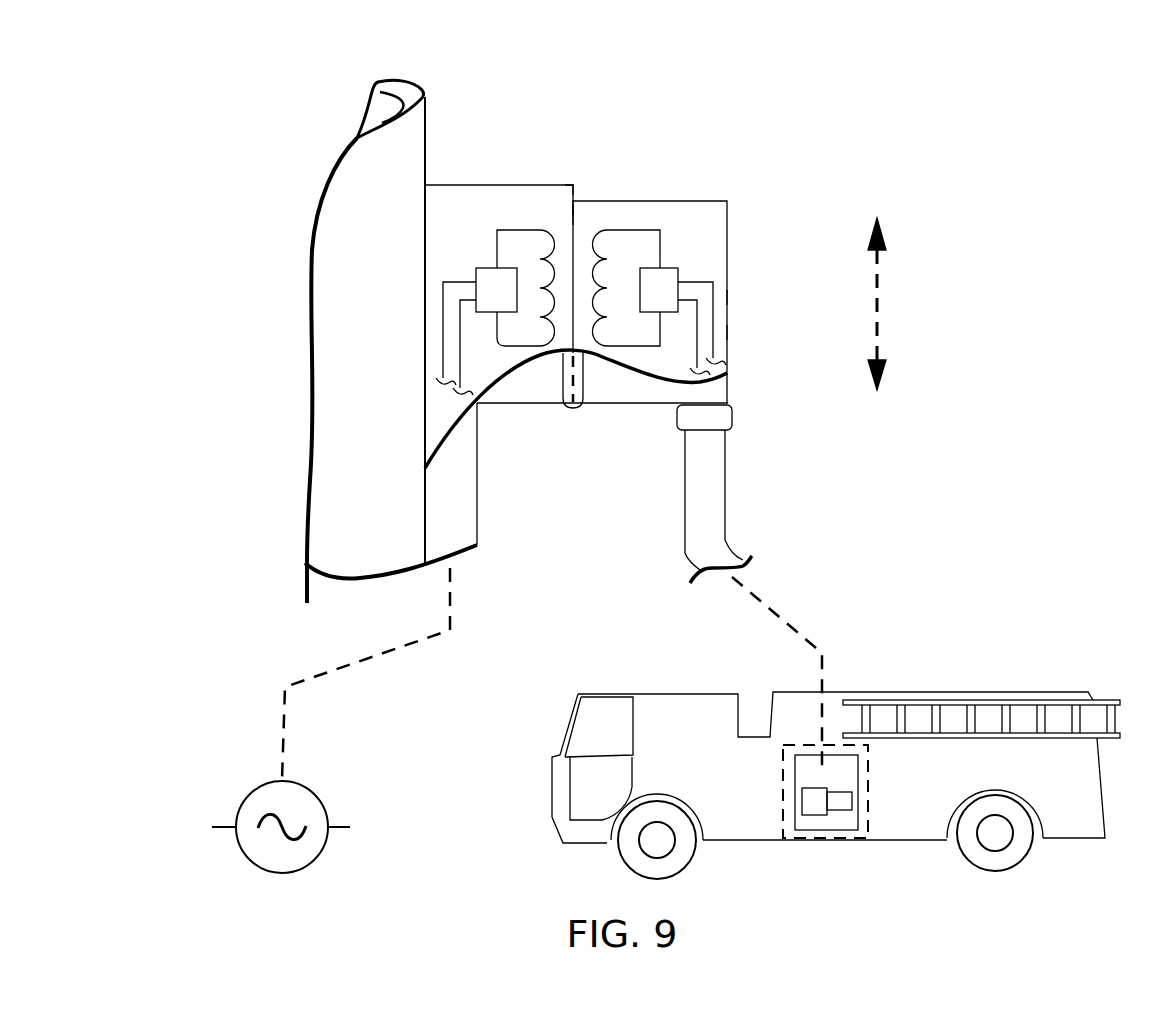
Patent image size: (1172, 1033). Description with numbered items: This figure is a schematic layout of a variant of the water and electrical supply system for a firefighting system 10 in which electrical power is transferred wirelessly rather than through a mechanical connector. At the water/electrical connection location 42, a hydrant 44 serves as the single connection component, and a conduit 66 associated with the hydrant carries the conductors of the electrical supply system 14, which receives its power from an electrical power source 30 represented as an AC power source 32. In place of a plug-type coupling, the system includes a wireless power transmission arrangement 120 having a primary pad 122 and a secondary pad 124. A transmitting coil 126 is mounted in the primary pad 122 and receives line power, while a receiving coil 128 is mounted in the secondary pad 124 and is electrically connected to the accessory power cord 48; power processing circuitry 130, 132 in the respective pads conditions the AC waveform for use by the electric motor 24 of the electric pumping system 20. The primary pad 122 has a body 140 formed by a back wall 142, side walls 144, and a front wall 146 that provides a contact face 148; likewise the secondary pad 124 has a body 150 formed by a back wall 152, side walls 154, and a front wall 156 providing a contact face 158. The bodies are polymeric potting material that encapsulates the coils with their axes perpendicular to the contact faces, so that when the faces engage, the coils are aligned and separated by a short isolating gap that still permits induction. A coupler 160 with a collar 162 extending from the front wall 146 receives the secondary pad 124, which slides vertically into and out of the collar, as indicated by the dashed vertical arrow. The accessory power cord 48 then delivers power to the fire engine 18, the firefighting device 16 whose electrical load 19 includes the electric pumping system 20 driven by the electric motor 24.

The firefighting system 10 is at (177, 635).
The electrical supply system 14 is at (174, 749).
The firefighting device 16 is at (848, 720).
The fire engine 18 is at (1086, 682).
The electrical load 19 is at (849, 811).
The electric pumping system 20 is at (842, 816).
The electric motor 24 is at (845, 802).
The electrical power source 30 is at (236, 845).
The AC power source 32 is at (277, 862).
The water/electrical connection location 42 is at (306, 620).
The hydrant 44 is at (292, 462).
The accessory power cord 48 is at (725, 503).
The conduit 66 is at (468, 520).
The wireless power transmission arrangement 120 is at (580, 286).
The primary pad 122 is at (501, 299).
The secondary pad 124 is at (702, 230).
The transmitting coil 126 is at (500, 230).
The receiving coil 128 is at (660, 230).
The power processing circuitry 130 is at (476, 270).
The power processing circuitry 132 is at (678, 282).
The body 140 is at (422, 252).
The back wall 142 is at (425, 270).
The side walls 144 is at (497, 185).
The front wall 146 is at (570, 205).
The contact face 148 is at (573, 196).
The body 150 is at (731, 297).
The back wall 152 is at (727, 333).
The side walls 154 is at (640, 201).
The front wall 156 is at (579, 218).
The contact face 158 is at (576, 212).
The coupler 160 is at (573, 411).
The collar 162 is at (584, 385).